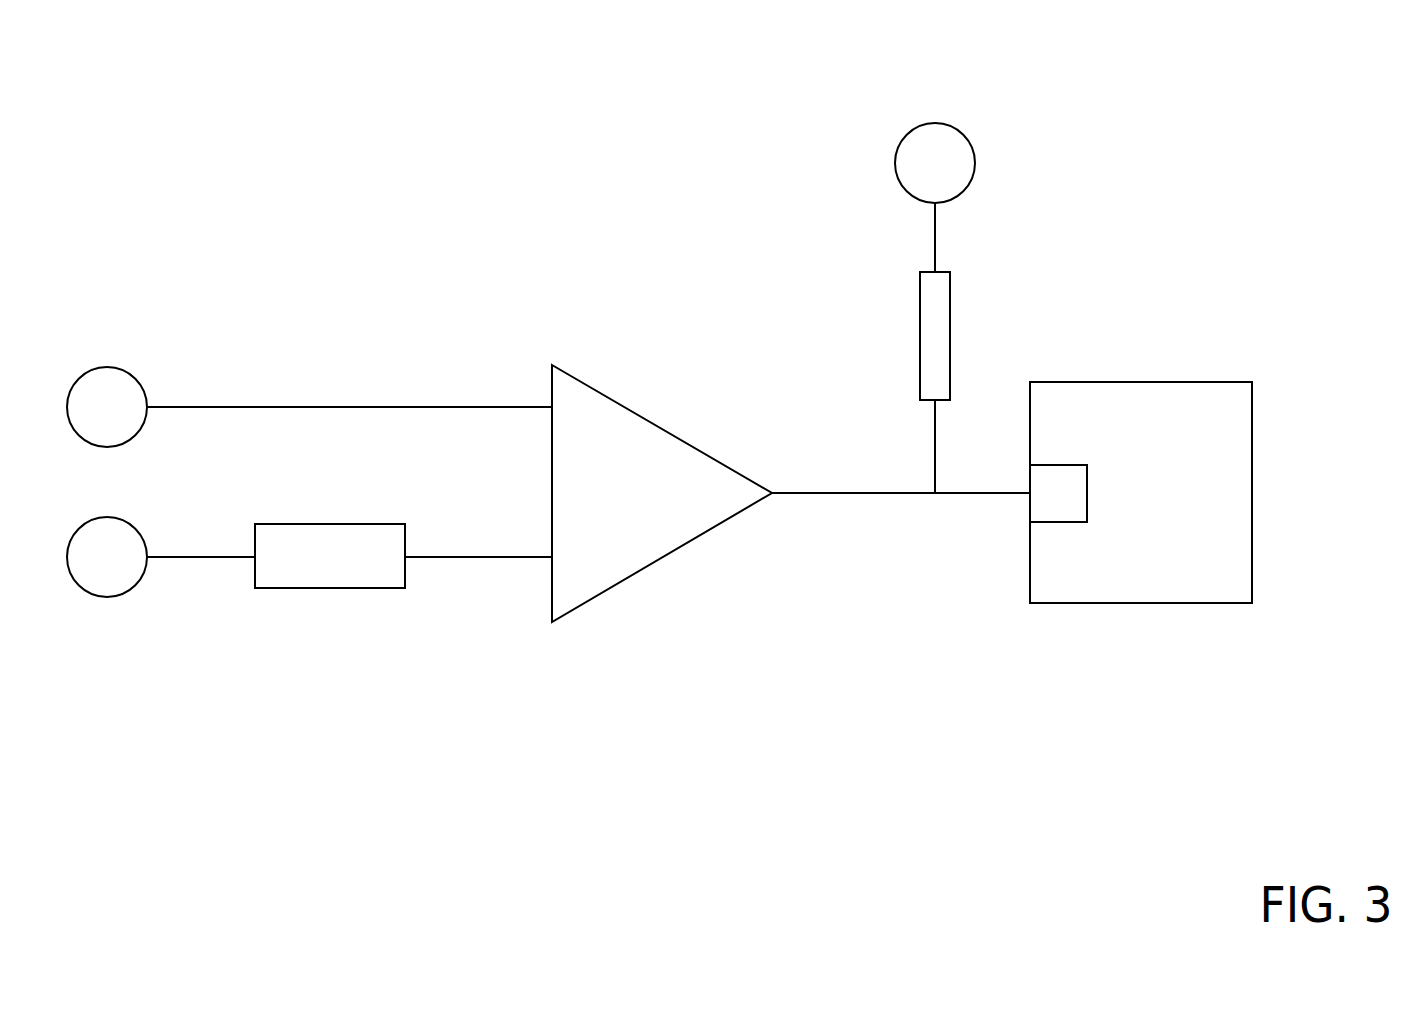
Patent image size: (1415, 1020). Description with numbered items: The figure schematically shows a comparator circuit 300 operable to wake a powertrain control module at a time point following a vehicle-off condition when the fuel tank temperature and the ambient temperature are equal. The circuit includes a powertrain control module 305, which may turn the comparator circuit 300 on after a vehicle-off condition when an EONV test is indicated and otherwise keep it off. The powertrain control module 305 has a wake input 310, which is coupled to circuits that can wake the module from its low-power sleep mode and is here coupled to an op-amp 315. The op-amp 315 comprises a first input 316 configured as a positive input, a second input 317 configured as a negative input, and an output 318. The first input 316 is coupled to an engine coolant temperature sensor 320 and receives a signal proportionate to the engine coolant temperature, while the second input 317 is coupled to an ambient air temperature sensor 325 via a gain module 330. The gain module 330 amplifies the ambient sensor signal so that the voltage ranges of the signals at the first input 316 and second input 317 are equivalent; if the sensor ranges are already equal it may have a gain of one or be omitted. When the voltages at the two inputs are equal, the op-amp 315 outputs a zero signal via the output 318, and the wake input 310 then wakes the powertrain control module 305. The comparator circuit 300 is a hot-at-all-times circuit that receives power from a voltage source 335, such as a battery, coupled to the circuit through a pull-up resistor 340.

The comparator circuit 300 is at (1147, 83).
The powertrain control module 305 is at (1207, 600).
The wake input 310 is at (1041, 508).
The op-amp 315 is at (668, 506).
The first input 316 is at (546, 407).
The second input 317 is at (546, 557).
The output 318 is at (774, 493).
The engine coolant temperature sensor 320 is at (90, 420).
The ambient air temperature sensor 325 is at (90, 570).
The gain module 330 is at (358, 583).
The voltage source 335 is at (918, 176).
The pull-up resistor 340 is at (952, 372).